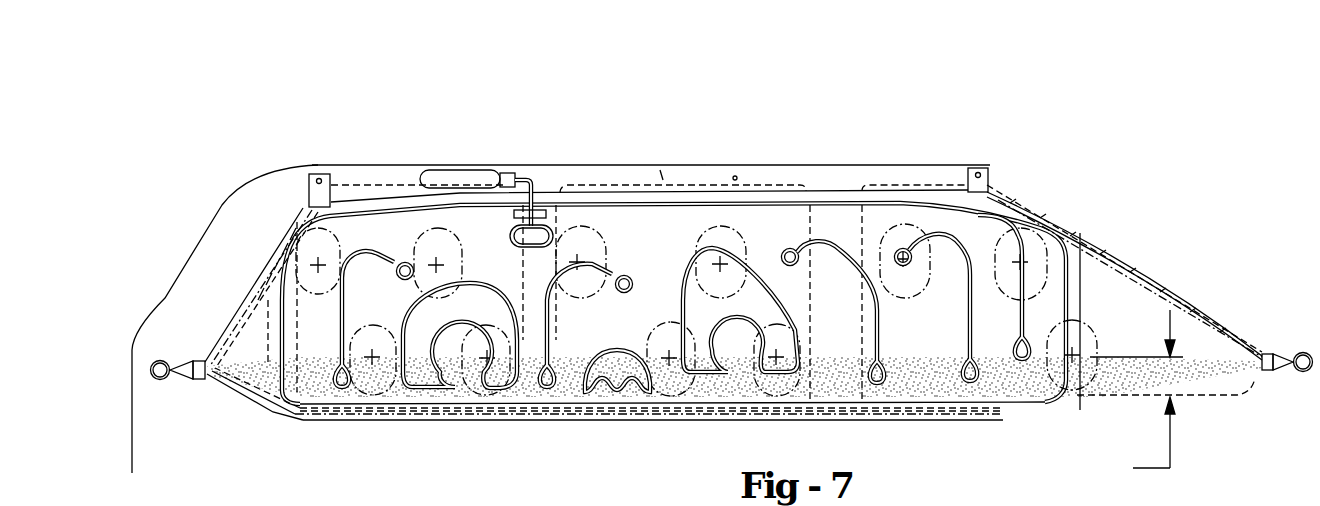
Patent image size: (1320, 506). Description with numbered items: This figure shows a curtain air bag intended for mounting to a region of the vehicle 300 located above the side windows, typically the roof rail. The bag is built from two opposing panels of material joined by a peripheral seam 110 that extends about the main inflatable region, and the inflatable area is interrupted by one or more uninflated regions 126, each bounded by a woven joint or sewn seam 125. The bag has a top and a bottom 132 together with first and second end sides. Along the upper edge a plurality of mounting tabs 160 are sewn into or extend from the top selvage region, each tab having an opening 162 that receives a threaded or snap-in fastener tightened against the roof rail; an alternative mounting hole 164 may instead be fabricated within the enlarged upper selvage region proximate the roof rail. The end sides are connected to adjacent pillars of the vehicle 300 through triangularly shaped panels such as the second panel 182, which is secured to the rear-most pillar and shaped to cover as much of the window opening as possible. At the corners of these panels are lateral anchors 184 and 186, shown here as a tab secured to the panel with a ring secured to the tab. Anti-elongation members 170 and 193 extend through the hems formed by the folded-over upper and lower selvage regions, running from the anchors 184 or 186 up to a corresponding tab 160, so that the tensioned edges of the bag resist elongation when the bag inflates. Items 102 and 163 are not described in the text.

The vehicle 300 is at (897, 140).
The pad body 102 is at (950, 373).
The peripheral seam 110 is at (583, 397).
The sewn seam 125 is at (740, 342).
The uninflated region 126 is at (440, 383).
The bottom 132 is at (507, 422).
The mounting tab 160 is at (308, 184).
The opening 162 is at (250, 318).
The fastener hole 163 is at (327, 178).
The mounting hole 164 is at (1120, 290).
The anti-elongation member 170 is at (275, 290).
The anti-elongation member 193 is at (275, 290).
The second panel 182 is at (253, 383).
The anchor 184 is at (1257, 380).
The anchor 186 is at (203, 380).